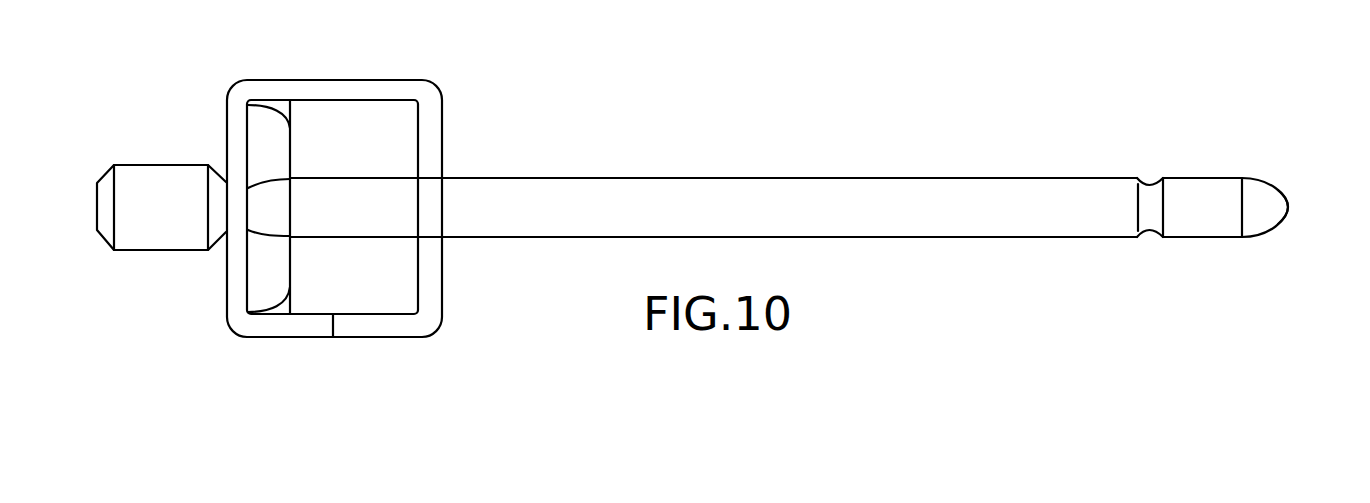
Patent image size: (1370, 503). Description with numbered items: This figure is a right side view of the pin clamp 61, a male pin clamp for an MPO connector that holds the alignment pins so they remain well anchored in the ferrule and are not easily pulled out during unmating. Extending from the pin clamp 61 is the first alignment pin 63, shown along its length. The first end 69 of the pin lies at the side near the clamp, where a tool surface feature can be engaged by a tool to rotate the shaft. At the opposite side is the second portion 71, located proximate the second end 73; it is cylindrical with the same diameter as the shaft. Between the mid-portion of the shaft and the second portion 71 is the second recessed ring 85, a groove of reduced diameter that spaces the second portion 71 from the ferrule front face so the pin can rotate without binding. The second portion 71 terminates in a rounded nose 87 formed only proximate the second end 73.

The pin clamp 61 is at (367, 83).
The first alignment pin 63 is at (717, 200).
The first end 69 is at (97, 220).
The second portion 71 is at (1213, 156).
The second recessed ring 85 is at (1152, 187).
The rounded nose 87 is at (1277, 184).
The second end 73 is at (1288, 204).